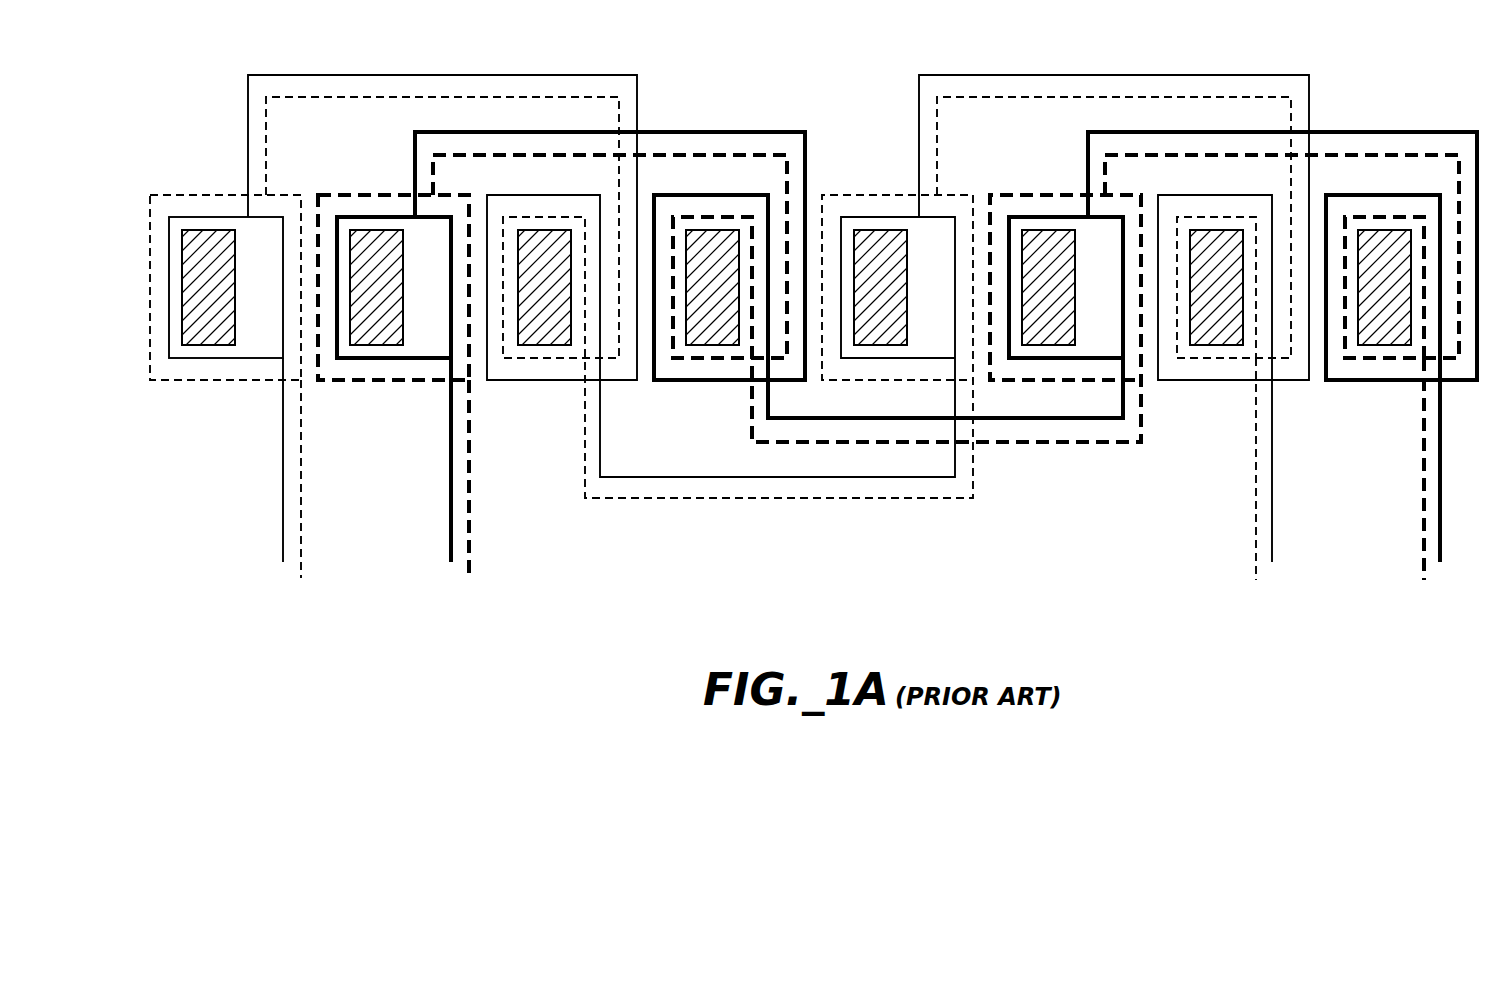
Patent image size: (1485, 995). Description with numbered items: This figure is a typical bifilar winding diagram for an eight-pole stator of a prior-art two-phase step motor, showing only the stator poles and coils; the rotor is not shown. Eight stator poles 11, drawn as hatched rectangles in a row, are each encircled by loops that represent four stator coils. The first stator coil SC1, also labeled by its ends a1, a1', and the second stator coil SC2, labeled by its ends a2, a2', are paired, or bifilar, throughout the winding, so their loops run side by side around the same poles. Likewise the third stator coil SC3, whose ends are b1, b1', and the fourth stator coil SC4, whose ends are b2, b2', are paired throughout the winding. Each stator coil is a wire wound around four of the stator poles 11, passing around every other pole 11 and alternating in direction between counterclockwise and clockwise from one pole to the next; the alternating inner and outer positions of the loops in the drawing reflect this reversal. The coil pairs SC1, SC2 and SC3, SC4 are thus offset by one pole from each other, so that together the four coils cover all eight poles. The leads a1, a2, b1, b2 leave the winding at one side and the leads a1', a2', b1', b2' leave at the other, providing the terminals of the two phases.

The stator pole 11 is at (200, 231).
The first stator coil SC1 is at (300, 75).
The second stator coil SC2 is at (458, 97).
The third stator coil SC3 is at (670, 132).
The fourth stator coil SC4 is at (755, 155).
The first stator coil terminal a1 is at (266, 460).
The second stator coil terminal a2 is at (301, 498).
The third stator coil terminal b1 is at (435, 460).
The fourth stator coil terminal b2 is at (470, 498).
The first stator coil terminal a1' is at (1291, 471).
The second stator coil terminal a2' is at (1255, 487).
The third stator coil terminal b1' is at (1460, 471).
The fourth stator coil terminal b2' is at (1423, 487).